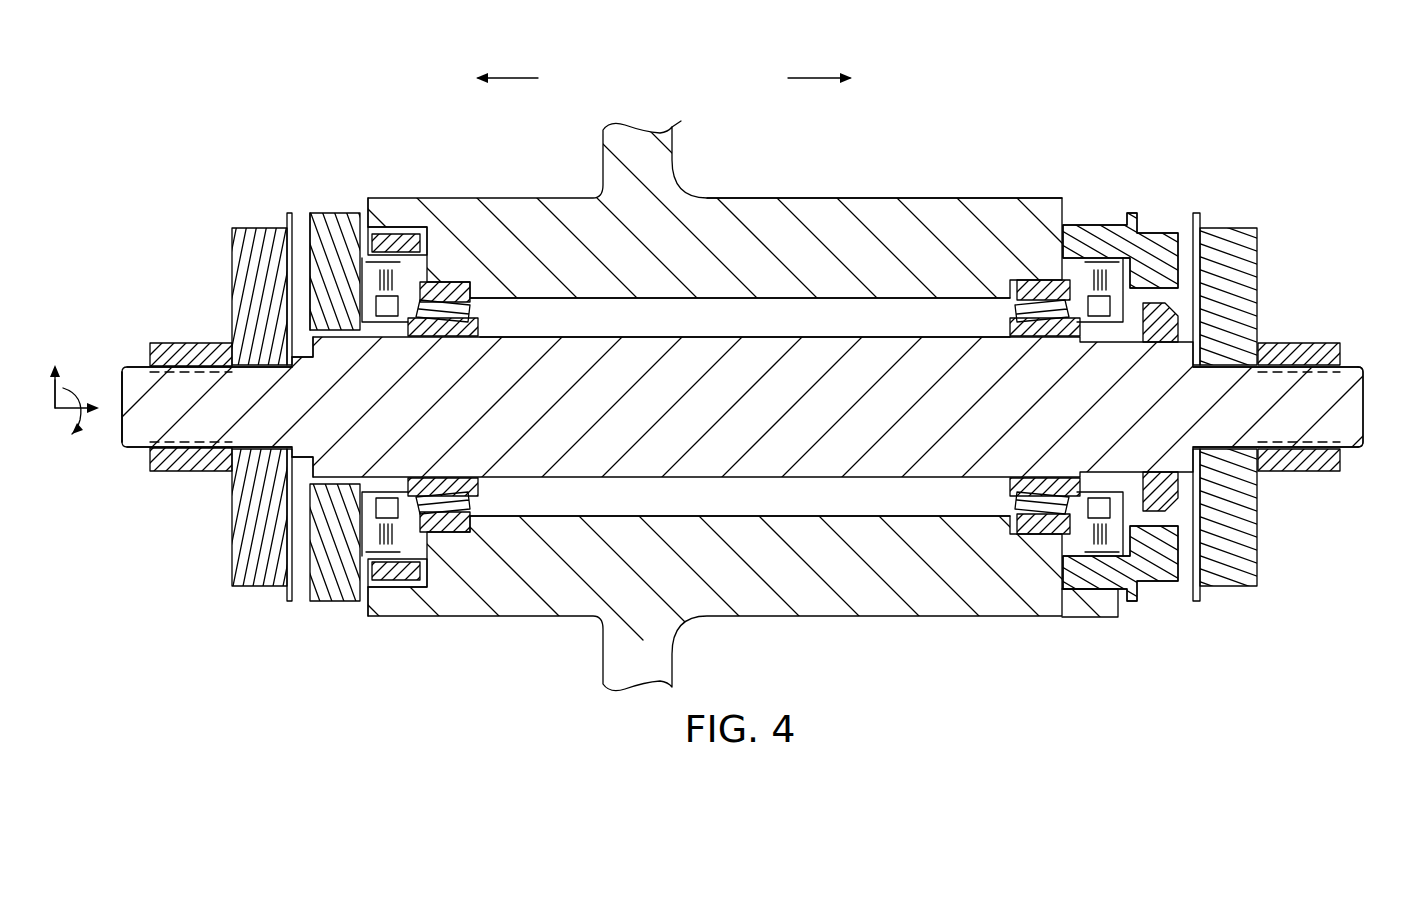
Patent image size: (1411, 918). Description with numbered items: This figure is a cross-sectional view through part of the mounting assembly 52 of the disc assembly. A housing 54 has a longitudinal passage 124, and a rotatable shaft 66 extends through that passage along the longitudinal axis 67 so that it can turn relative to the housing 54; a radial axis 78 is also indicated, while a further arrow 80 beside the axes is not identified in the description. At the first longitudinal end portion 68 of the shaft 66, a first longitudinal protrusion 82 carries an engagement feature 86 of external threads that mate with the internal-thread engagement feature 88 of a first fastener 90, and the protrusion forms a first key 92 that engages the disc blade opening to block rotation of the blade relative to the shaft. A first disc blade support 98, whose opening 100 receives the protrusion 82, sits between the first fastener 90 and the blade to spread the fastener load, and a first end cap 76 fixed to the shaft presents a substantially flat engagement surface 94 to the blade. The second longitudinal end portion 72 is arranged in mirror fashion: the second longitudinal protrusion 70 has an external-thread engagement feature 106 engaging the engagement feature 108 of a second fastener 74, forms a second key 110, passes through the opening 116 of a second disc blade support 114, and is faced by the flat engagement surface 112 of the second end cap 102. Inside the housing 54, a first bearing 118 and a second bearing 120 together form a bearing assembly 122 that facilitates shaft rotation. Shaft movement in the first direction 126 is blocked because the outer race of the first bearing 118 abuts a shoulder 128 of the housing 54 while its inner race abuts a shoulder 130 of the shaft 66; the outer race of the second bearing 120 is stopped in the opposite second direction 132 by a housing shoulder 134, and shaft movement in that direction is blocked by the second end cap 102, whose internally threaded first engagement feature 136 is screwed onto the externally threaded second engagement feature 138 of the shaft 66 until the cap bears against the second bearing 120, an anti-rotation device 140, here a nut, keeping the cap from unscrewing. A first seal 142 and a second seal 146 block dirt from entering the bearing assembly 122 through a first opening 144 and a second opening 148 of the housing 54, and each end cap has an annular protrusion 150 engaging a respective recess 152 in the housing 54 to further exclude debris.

The mounting assembly 52 is at (876, 150).
The housing 54 is at (915, 198).
The rotatable shaft 66 is at (745, 476).
The longitudinal axis 67 is at (96, 406).
The first longitudinal end portion 68 is at (205, 323).
The second longitudinal protrusion 70 is at (1368, 403).
The second longitudinal end portion 72 is at (1286, 310).
The second fastener 74 is at (1280, 471).
The first end cap 76 is at (328, 214).
The radial axis 78 is at (55, 380).
The rotational direction 80 is at (83, 432).
The first longitudinal protrusion 82 is at (122, 390).
The engagement feature 86 is at (192, 443).
The engagement feature 88 is at (183, 355).
The first fastener 90 is at (192, 340).
The first key 92 is at (292, 468).
The engagement surface 94 is at (308, 262).
The first disc blade support 98 is at (262, 229).
The opening 100 is at (272, 442).
The second end cap 102 is at (1150, 235).
The engagement feature 106 is at (1320, 343).
The engagement feature 108 is at (1320, 442).
The second key 110 is at (1257, 533).
The engagement surface 112 is at (1177, 263).
The second disc blade support 114 is at (1232, 590).
The opening 116 is at (1228, 367).
The first bearing 118 is at (458, 308).
The second bearing 120 is at (1010, 315).
The bearing assembly 122 is at (447, 190).
The longitudinal passage 124 is at (778, 322).
The first direction 126 is at (815, 78).
The shoulder 128 is at (454, 282).
The shoulder 130 is at (437, 340).
The second direction 132 is at (508, 78).
The shoulder 134 is at (1040, 280).
The first engagement feature 136 is at (1068, 342).
The second engagement feature 138 is at (1088, 476).
The anti-rotation device 140 is at (1147, 476).
The first seal 142 is at (383, 303).
The first opening 144 is at (322, 530).
The second seal 146 is at (1090, 268).
The second opening 148 is at (1166, 535).
The annular protrusion 150 is at (395, 238).
The recess 152 is at (420, 588).